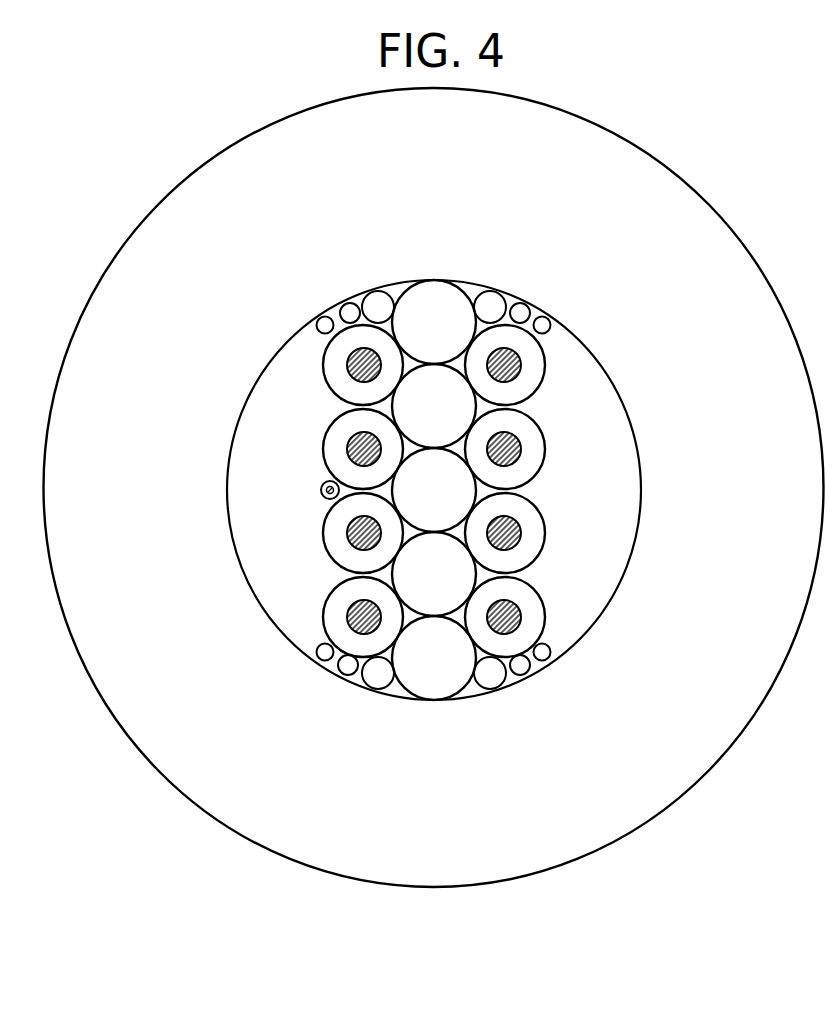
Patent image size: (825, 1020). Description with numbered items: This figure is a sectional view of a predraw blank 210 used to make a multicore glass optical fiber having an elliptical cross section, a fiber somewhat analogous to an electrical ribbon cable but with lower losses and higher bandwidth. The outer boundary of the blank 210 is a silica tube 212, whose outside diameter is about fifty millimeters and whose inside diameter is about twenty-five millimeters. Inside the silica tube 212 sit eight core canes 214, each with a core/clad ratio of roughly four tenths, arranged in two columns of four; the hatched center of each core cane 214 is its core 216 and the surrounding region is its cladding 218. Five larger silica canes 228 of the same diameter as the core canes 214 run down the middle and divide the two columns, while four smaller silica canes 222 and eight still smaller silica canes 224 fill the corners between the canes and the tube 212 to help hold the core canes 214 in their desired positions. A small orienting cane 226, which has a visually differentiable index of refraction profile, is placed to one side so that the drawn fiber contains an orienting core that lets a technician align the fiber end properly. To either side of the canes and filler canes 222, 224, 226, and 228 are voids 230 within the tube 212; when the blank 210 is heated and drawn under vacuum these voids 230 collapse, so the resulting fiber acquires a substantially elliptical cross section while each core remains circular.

The blank 210 is at (708, 126).
The silica tube 212 is at (740, 243).
The core cane 214 is at (547, 353).
The fiber core 216 is at (515, 375).
The fiber cladding 218 is at (510, 390).
The silica cane 222 is at (477, 692).
The silica cane 224 is at (523, 678).
The orienting cane 226 is at (322, 493).
The silica cane 228 is at (402, 696).
The void 230 is at (258, 435).